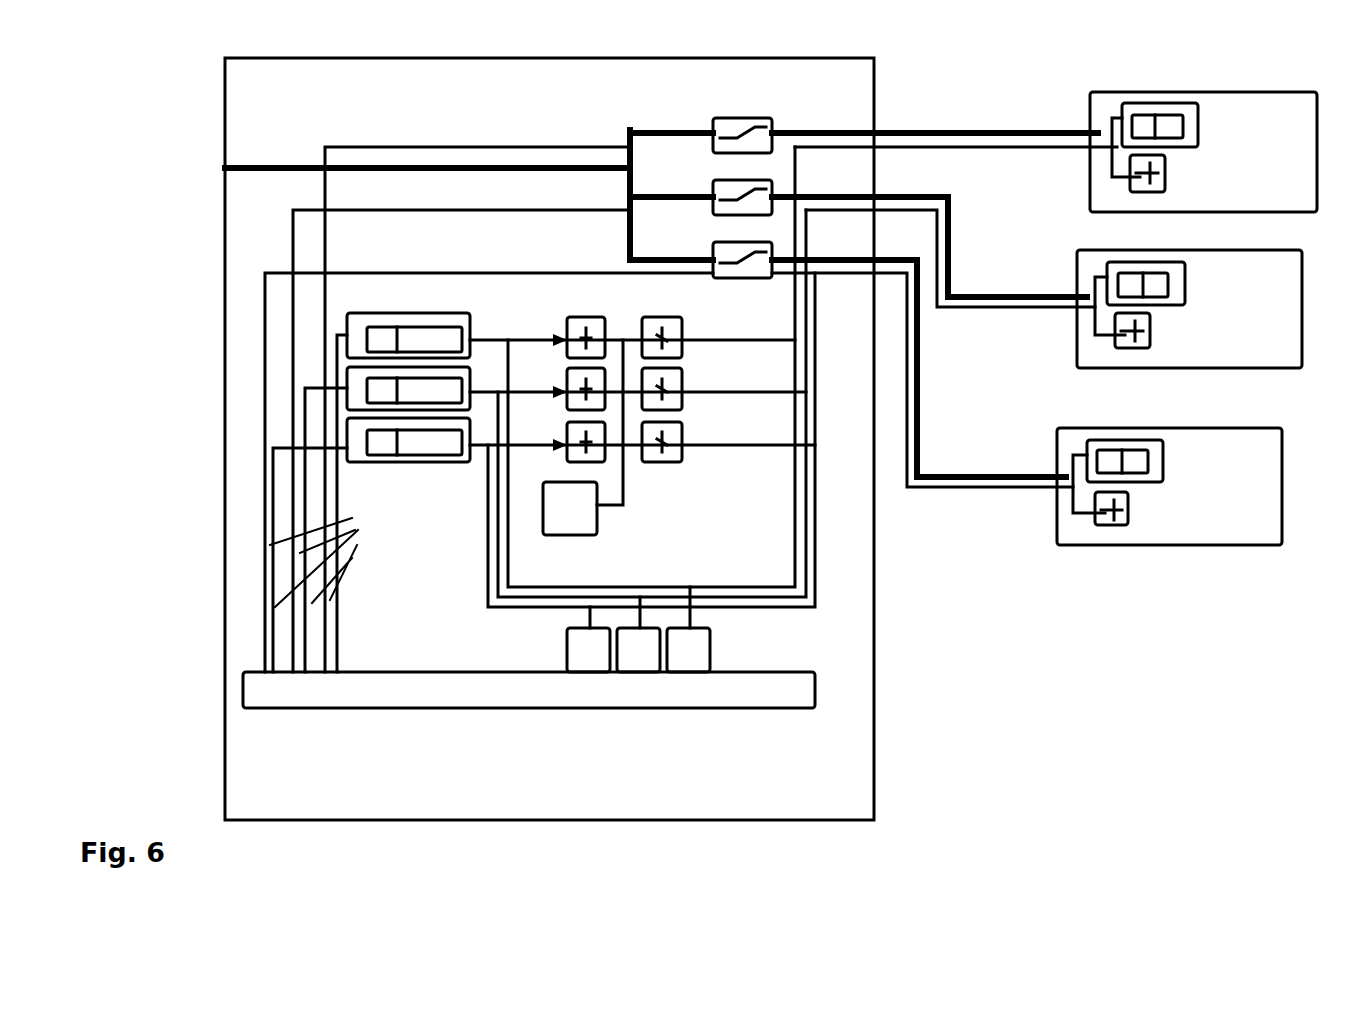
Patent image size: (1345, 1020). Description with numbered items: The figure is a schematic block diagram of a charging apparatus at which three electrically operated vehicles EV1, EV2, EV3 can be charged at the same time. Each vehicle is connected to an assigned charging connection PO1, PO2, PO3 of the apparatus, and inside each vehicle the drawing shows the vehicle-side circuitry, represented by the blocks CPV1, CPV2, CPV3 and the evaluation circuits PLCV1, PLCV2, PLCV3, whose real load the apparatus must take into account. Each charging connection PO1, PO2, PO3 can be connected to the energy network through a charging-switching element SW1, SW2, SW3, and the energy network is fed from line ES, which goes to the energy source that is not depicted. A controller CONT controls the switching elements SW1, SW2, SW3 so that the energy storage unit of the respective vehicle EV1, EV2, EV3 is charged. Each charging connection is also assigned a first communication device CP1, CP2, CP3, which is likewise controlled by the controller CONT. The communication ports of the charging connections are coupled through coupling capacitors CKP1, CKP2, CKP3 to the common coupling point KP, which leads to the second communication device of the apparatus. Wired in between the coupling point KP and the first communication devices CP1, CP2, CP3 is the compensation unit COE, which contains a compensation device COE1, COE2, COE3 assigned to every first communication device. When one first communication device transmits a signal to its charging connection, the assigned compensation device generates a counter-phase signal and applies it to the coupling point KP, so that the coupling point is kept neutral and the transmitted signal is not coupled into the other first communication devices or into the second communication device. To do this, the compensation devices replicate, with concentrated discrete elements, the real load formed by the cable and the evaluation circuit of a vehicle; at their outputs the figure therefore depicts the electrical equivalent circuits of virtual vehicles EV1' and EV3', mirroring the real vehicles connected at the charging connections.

The line to energy source ES is at (258, 166).
The compensation unit COE is at (528, 292).
The compensation device COE1 is at (300, 335).
The compensation device COE2 is at (300, 378).
The compensation device COE3 is at (300, 423).
The charging-switching element SW1 is at (727, 118).
The charging-switching element SW2 is at (725, 166).
The charging-switching element SW3 is at (720, 226).
The charging connection PO1 is at (875, 126).
The charging connection PO2 is at (895, 207).
The charging connection PO3 is at (882, 267).
The vehicle EV1 is at (1203, 127).
The vehicle EV2 is at (1189, 336).
The vehicle EV3 is at (1169, 531).
The charging plug of first vehicle CPV1 is at (1198, 122).
The charging plug of second vehicle CPV2 is at (1185, 282).
The charging plug of third vehicle CPV3 is at (1163, 457).
The evaluation circuit of vehicle PLCV1 is at (1165, 175).
The evaluation circuit of vehicle PLCV2 is at (1150, 333).
The evaluation circuit of vehicle PLCV3 is at (1181, 511).
The virtual vehicle EV1' is at (403, 450).
The virtual vehicle EV3' is at (371, 545).
The coupling capacitor CKP1 is at (673, 333).
The coupling capacitor CKP2 is at (673, 385).
The coupling capacitor CKP3 is at (673, 437).
The coupling point KP is at (630, 447).
The controller CONT is at (312, 706).
The first communication device CP1 is at (695, 648).
The first communication device CP2 is at (638, 648).
The first communication device CP3 is at (580, 648).